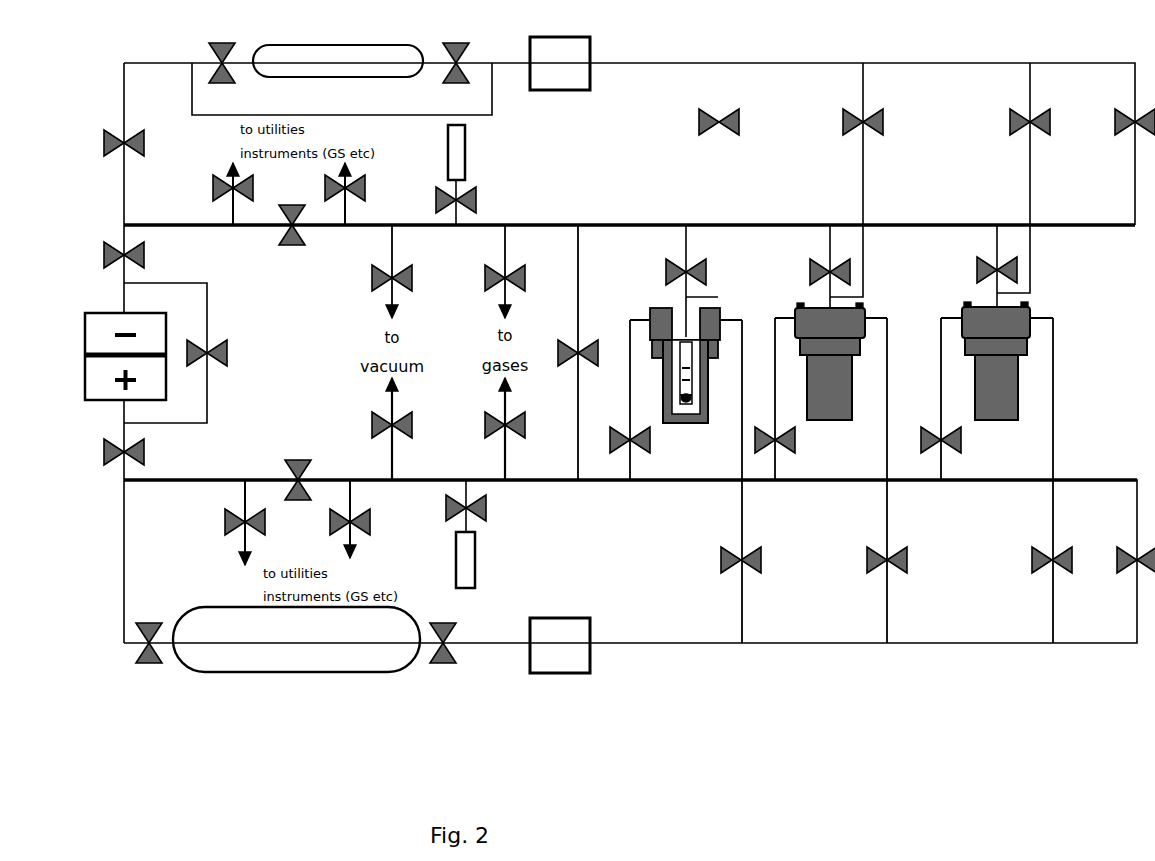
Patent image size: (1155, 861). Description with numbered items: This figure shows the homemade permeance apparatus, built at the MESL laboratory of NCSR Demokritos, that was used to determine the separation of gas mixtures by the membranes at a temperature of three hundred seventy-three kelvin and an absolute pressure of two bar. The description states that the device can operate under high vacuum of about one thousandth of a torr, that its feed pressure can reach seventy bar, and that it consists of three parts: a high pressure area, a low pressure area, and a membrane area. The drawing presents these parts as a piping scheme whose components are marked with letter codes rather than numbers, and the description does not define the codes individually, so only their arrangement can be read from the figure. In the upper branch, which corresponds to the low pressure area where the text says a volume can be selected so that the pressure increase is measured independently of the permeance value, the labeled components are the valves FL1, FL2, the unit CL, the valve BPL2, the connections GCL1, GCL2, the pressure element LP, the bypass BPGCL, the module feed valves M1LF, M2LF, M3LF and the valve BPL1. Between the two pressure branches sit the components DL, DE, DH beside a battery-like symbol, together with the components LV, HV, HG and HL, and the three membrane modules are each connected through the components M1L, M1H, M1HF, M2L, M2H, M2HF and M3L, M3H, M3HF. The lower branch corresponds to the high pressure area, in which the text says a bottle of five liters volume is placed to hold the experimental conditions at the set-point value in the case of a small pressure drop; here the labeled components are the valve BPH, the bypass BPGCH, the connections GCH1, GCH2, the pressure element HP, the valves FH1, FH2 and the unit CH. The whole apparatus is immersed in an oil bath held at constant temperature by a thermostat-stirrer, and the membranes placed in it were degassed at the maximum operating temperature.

The low-pressure feed valve 1 FL1 is at (220, 47).
The low-pressure feed valve 2 FL2 is at (452, 46).
The low-pressure compressor CL is at (560, 63).
The low-pressure bypass valve 2 BPL2 is at (148, 143).
The low-pressure gas connection valve 1 GCL1 is at (211, 194).
The low-pressure gas connection valve 2 GCL2 is at (360, 194).
The low-pressure gauge valve LP is at (469, 175).
The low-pressure gas connection bypass valve BPGCL is at (283, 240).
The module 1 low-pressure feed valve M1LF is at (687, 122).
The module 2 low-pressure feed valve M2LF is at (829, 180).
The module 3 low-pressure feed valve M3LF is at (997, 178).
The low-pressure bypass valve 1 BPL1 is at (1115, 134).
The low-pressure drain valve DL is at (138, 255).
The electrolyser bypass valve DE is at (220, 353).
The high-pressure drain valve DH is at (139, 452).
The low-pressure vacuum valve LV is at (402, 271).
The high-pressure vacuum valve HV is at (404, 429).
The gas supply valve HG is at (519, 352).
The high/low pressure connection valve HL is at (580, 363).
The module 1 low-pressure valve M1L is at (667, 281).
The module 1 high-pressure valve and cell M1H is at (665, 380).
The module 1 high-pressure feed valve M1HF is at (708, 560).
The module 2 low-pressure valve M2L is at (803, 266).
The module 2 high-pressure valve and chamber M2H is at (810, 378).
The module 2 high-pressure feed valve M2HF is at (856, 560).
The module 3 low-pressure valve M3L is at (969, 266).
The module 3 high-pressure valve and chamber M3H is at (975, 377).
The module 3 high-pressure feed valve M3HF is at (1021, 560).
The high-pressure bypass valve BPH is at (1120, 571).
The high-pressure gas connection bypass valve BPGCH is at (288, 466).
The high-pressure gas connection valve 1 GCH1 is at (221, 522).
The high-pressure gas connection valve 2 GCH2 is at (367, 519).
The high-pressure gauge valve HP is at (478, 534).
The high-pressure feed valve 1 FH1 is at (149, 662).
The high-pressure feed valve 2 FH2 is at (442, 662).
The high-pressure compressor CH is at (560, 645).